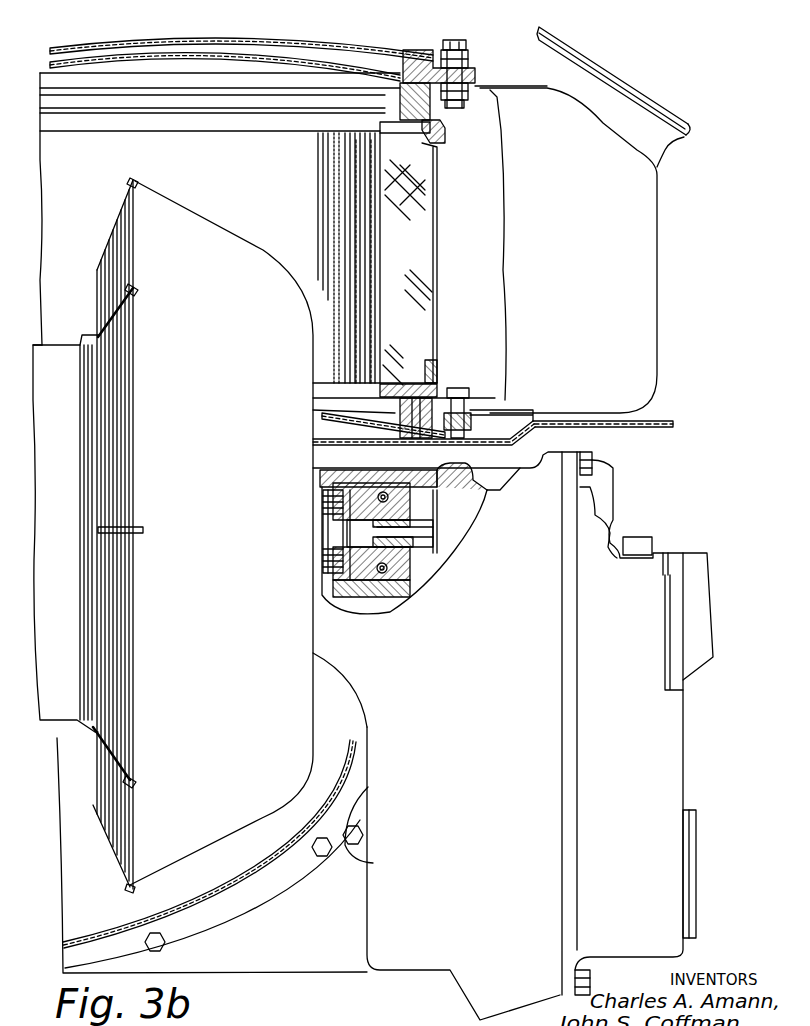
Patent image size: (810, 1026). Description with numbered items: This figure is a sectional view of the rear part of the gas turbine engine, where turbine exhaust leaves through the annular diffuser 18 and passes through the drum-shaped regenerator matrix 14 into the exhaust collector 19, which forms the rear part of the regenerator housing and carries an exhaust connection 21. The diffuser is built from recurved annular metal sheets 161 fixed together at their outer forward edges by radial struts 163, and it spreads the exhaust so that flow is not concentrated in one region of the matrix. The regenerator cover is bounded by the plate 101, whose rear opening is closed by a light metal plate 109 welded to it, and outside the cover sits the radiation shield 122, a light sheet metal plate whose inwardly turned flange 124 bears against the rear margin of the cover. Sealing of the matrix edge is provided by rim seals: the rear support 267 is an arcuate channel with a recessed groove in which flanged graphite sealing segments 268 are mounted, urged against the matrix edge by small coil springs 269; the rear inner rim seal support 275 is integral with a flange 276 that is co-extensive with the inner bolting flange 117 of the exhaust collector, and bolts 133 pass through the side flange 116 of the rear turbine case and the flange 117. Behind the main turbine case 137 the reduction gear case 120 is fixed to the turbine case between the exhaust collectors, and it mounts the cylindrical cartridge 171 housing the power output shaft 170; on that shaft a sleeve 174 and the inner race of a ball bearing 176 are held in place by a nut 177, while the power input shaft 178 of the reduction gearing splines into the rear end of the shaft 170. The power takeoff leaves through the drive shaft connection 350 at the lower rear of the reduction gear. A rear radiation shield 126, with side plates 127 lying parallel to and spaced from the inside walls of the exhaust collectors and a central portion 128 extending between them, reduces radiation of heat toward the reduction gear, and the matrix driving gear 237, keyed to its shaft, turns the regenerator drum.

The light metal plate 109 is at (205, 46).
The radiation shield 122 is at (375, 56).
The rear support 267 is at (437, 62).
The inwardly turned flange 124 is at (472, 64).
The plate 101 is at (477, 76).
The exhaust connection 21 is at (686, 120).
The flanged sealing segments 268 is at (432, 141).
The coil springs 269 is at (413, 122).
The regenerator matrix 14 is at (437, 269).
The exhaust collector 19 is at (657, 319).
The annular diffuser 18 is at (243, 242).
The recurved annular metal sheets 161 is at (110, 246).
The main turbine case 137 is at (68, 340).
The radial struts 163 is at (120, 529).
The rear inner rim seal support 275 is at (432, 400).
The bolts 133 is at (458, 396).
The bolting flange 117 is at (470, 411).
The flange 276 is at (500, 432).
The rear radiation shield 126 is at (657, 415).
The side plates 127 is at (600, 426).
The cylindrical cartridge 171 is at (327, 481).
The power output shaft 170 is at (350, 481).
The sleeve 174 is at (380, 481).
The ball bearing 176 is at (410, 481).
The side flange 116 is at (478, 440).
The power input shaft 178 is at (433, 530).
The nut 177 is at (410, 562).
The matrix driving gears 237 is at (360, 853).
The central portion 128 is at (232, 893).
The reduction gear case 120 is at (453, 975).
The drive shaft connection 350 is at (695, 917).